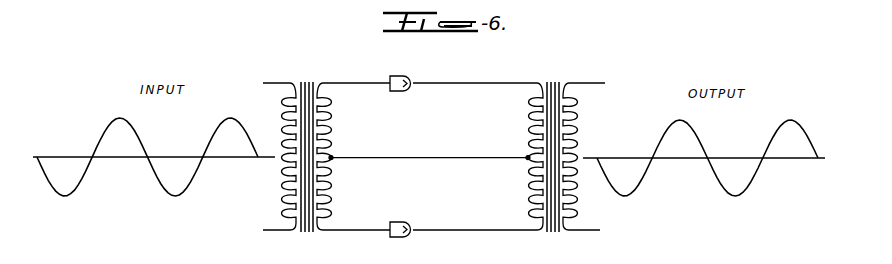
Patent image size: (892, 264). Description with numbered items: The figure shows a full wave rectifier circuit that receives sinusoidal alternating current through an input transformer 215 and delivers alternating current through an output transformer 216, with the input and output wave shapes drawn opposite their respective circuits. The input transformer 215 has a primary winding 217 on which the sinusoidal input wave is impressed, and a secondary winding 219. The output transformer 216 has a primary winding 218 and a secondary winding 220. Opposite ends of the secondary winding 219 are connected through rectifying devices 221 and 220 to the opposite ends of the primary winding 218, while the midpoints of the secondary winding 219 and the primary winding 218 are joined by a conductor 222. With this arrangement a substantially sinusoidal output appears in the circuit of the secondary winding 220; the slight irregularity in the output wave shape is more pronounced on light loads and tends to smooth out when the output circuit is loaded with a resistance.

The input transformer 215 is at (325, 76).
The output transformer 216 is at (571, 77).
The primary winding 217 is at (284, 113).
The primary winding 218 is at (530, 113).
The secondary winding 219 is at (332, 115).
The secondary winding 220 is at (398, 222).
The rectifying device 221 is at (396, 76).
The conductor 222 is at (413, 157).